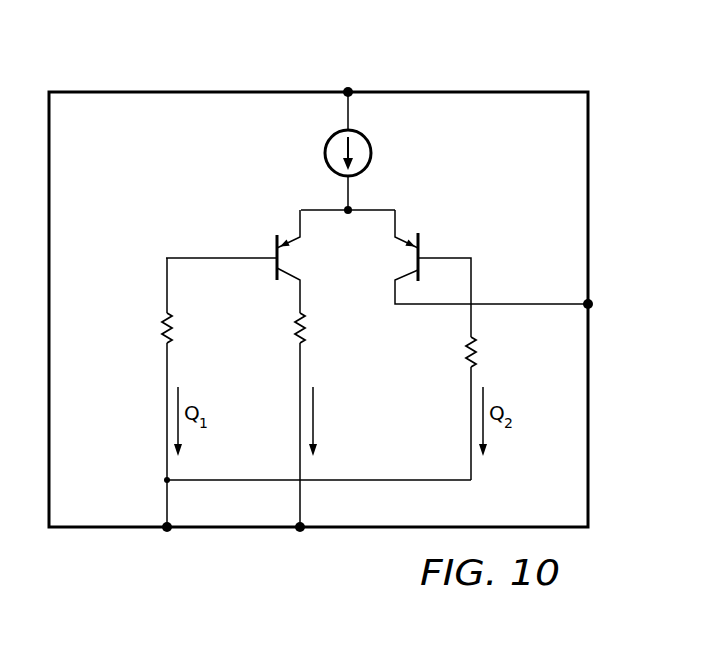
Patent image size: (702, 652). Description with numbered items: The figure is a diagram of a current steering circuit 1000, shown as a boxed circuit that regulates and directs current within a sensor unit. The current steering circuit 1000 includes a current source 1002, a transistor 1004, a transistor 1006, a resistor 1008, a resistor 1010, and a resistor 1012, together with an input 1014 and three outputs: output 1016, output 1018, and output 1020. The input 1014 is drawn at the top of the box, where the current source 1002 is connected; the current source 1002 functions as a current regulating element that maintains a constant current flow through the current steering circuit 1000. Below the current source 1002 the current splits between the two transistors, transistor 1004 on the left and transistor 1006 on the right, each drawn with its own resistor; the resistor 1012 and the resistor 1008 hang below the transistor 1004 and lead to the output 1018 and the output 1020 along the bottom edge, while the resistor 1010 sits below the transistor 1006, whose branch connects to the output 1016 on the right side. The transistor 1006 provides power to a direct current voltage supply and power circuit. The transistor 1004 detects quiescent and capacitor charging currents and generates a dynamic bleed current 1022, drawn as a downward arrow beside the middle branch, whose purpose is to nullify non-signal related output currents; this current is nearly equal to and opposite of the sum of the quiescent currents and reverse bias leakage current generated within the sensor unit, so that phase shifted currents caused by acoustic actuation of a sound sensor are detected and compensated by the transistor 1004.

The current steering circuit 1000 is at (215, 86).
The current source 1002 is at (324, 152).
The transistor 1004 is at (273, 250).
The transistor 1006 is at (421, 250).
The resistor 1008 is at (292, 326).
The resistor 1010 is at (478, 352).
The resistor 1012 is at (160, 326).
The input 1014 is at (353, 87).
The output 1016 is at (596, 298).
The output 1018 is at (163, 534).
The output 1020 is at (304, 534).
The dynamic bleed current 1022 is at (313, 397).